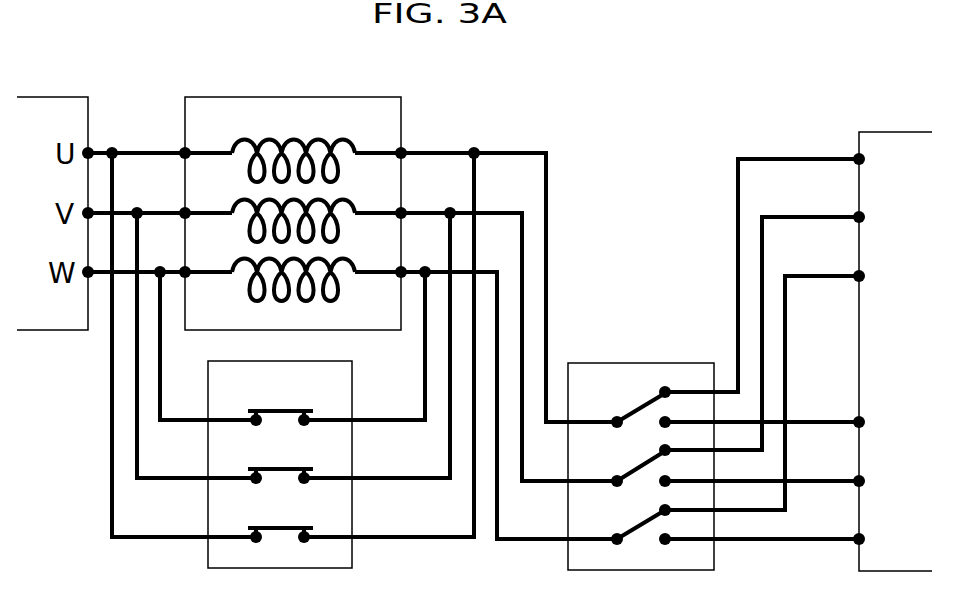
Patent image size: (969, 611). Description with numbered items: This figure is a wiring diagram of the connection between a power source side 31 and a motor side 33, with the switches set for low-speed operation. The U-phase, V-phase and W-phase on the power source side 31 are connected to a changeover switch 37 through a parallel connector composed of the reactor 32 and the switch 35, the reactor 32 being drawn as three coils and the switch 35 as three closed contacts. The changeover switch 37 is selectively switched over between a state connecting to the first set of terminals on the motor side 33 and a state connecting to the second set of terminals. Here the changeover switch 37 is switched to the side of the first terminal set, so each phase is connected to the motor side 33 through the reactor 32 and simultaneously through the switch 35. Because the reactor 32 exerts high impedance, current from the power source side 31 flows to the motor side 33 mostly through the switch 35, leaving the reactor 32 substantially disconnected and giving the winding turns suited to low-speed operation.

The power source side 31 is at (48, 341).
The reactor 32 is at (405, 341).
The motor side 33 is at (852, 125).
The switch 35 is at (364, 561).
The changeover switch 37 is at (563, 570).